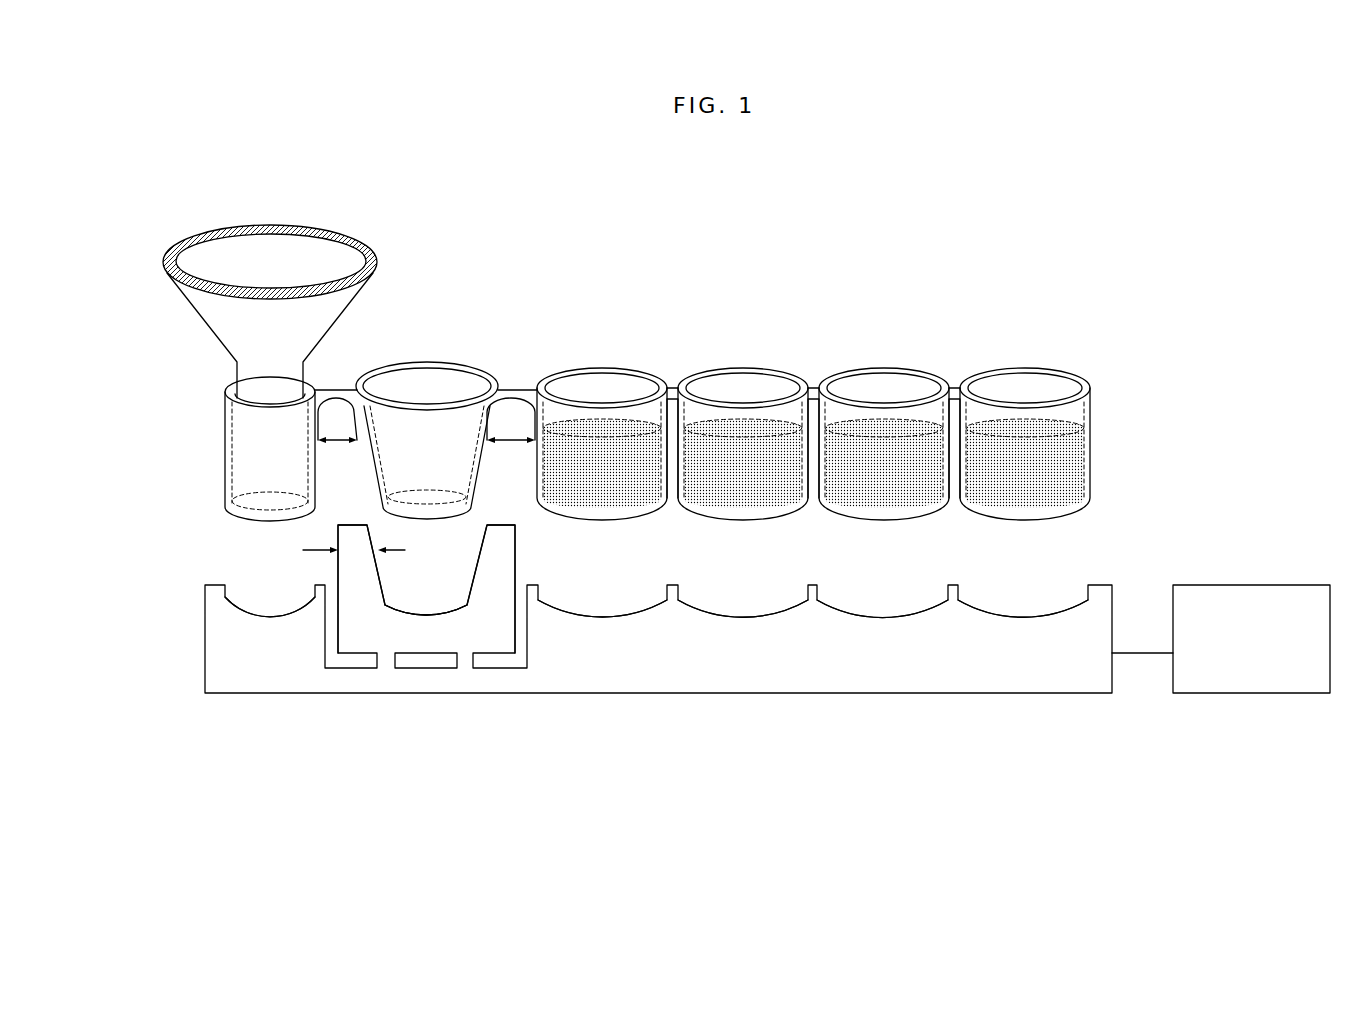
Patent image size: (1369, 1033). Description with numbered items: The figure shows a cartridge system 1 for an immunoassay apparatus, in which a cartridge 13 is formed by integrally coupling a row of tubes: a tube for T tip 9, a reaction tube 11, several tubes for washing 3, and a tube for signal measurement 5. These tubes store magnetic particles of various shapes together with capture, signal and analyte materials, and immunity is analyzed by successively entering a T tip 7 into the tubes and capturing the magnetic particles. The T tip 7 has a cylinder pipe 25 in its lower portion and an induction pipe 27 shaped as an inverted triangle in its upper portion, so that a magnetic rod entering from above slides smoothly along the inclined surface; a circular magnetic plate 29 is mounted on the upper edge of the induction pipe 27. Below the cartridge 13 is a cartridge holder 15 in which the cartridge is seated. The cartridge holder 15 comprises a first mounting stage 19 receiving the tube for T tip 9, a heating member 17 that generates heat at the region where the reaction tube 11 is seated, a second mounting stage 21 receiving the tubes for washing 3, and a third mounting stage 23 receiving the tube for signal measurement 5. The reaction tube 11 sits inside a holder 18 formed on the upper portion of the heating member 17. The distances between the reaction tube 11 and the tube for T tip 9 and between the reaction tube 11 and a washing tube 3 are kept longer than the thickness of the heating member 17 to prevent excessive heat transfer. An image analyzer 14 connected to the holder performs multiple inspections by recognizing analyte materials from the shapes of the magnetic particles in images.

The cartridge system 1 is at (648, 196).
The tubes for washing 3 is at (883, 385).
The tube for signal measurement 5 is at (1022, 385).
The T tip 7 is at (199, 222).
The tube for T tip 9 is at (226, 468).
The reaction tube 11 is at (450, 383).
The cartridge 13 is at (1128, 382).
The image analyzer 14 is at (1253, 593).
The cartridge holder 15 is at (853, 710).
The heating member 17 is at (435, 638).
The holder 18 is at (390, 616).
The first mounting stage 19 is at (268, 618).
The second mounting stage 21 is at (652, 613).
The third mounting stage 23 is at (1025, 618).
The cylinder pipe 25 is at (247, 393).
The induction pipe 27 is at (218, 318).
The circular magnetic plate 29 is at (302, 232).